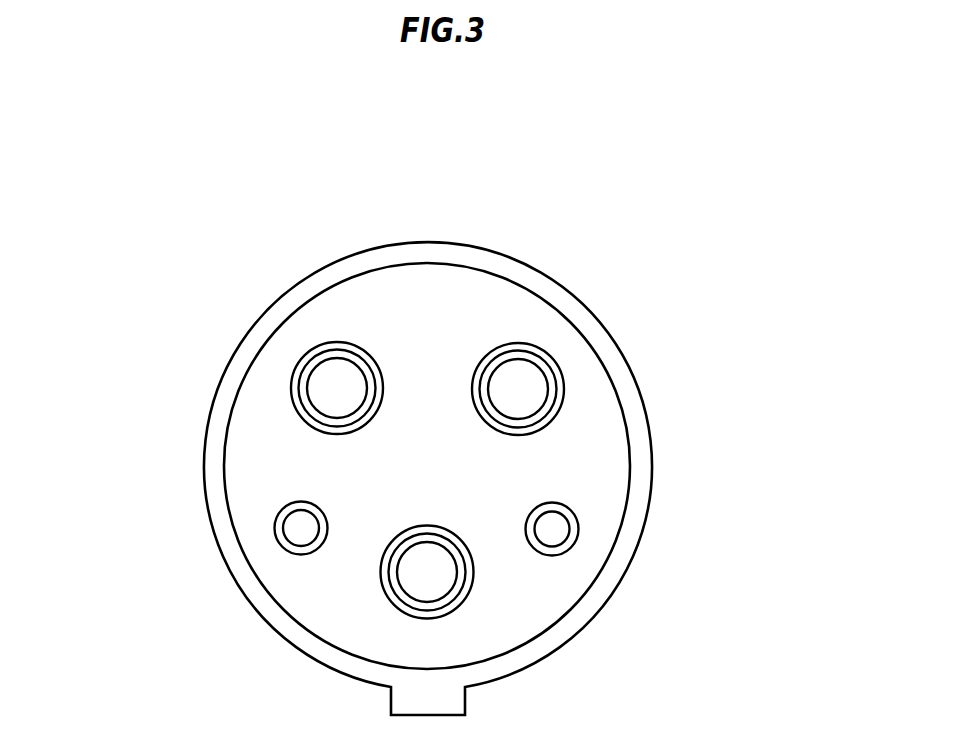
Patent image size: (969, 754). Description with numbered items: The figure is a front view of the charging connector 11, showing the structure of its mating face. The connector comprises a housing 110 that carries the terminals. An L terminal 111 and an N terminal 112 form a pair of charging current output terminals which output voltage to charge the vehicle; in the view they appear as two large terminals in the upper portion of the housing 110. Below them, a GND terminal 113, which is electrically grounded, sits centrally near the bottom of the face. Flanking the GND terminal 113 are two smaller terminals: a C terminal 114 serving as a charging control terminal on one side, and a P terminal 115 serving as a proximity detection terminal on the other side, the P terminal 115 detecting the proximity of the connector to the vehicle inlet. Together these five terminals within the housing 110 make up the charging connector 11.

The charging connector 11 is at (573, 198).
The housing 110 is at (327, 264).
The L terminal 111 is at (316, 363).
The N terminal 112 is at (543, 372).
The GND terminal 113 is at (457, 585).
The C terminal 114 is at (570, 523).
The P terminal 115 is at (283, 538).